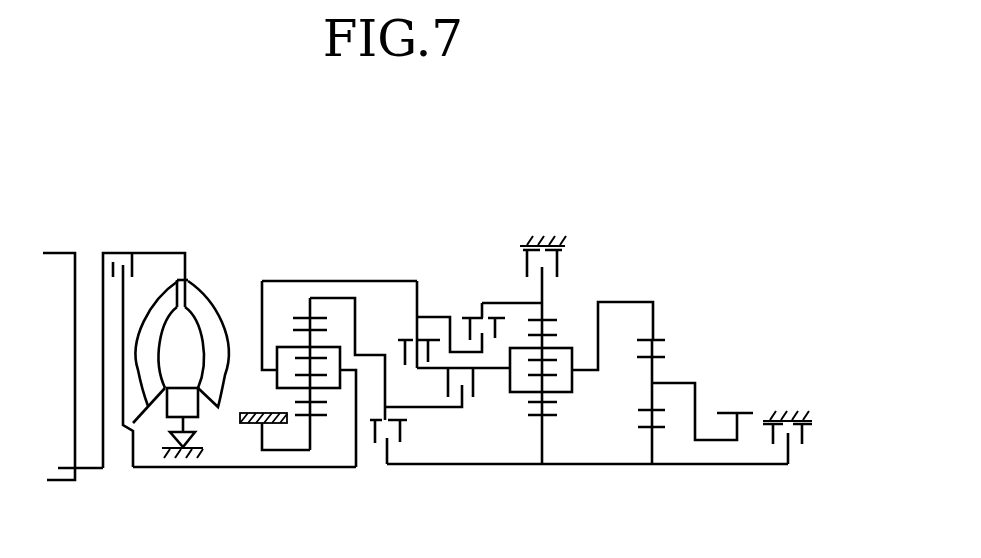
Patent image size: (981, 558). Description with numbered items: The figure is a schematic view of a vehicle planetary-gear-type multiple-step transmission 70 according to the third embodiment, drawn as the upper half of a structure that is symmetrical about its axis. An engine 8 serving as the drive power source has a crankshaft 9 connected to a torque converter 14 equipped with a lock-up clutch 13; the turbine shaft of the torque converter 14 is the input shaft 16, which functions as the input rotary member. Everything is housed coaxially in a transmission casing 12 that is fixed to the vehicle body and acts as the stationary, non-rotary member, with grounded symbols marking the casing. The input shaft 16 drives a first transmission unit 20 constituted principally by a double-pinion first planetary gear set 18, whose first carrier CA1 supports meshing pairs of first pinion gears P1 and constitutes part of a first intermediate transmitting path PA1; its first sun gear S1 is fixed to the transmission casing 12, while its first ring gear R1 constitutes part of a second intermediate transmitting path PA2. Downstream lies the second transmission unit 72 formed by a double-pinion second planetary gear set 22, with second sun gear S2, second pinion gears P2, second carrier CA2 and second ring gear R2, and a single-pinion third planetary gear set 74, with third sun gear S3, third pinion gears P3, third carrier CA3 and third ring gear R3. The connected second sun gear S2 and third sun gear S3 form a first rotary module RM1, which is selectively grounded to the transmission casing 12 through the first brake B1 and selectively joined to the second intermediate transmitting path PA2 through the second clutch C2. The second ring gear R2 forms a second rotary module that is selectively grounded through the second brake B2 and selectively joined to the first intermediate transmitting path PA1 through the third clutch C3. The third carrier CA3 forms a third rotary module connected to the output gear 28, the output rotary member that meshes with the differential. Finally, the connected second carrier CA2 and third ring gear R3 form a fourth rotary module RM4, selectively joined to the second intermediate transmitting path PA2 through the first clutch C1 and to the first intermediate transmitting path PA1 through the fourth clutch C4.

The engine 8 is at (60, 257).
The crankshaft 9 is at (89, 466).
The transmission casing 12 is at (250, 426).
The lock-up clutch 13 is at (134, 273).
The torque converter 14 is at (203, 256).
The input shaft 16 is at (185, 468).
The first planetary gear set 18 is at (308, 486).
The first transmission unit 20 is at (312, 194).
The second planetary gear set 22 is at (531, 487).
The output gear 28 is at (743, 412).
The transmission 70 is at (433, 116).
The second transmission unit 72 is at (603, 162).
The third planetary gear set 74 is at (650, 490).
The first intermediate transmitting path PA1 is at (348, 280).
The second intermediate transmitting path PA2 is at (378, 353).
The first ring gear R1 is at (305, 317).
The first carrier CA1 is at (276, 378).
The first pinion gears P1 is at (318, 397).
The first sun gear S1 is at (313, 418).
The first clutch C1 is at (447, 387).
The second clutch C2 is at (396, 442).
The third clutch C3 is at (479, 323).
The fourth clutch C4 is at (415, 324).
The first brake B1 is at (787, 428).
The second brake B2 is at (531, 263).
The second ring gear R2 is at (550, 318).
The second carrier CA2 is at (513, 393).
The second pinion gears P2 is at (553, 398).
The second sun gear S2 is at (550, 418).
The third ring gear R3 is at (663, 338).
The third carrier CA3 is at (687, 383).
The third pinion gears P3 is at (642, 411).
The third sun gear S3 is at (657, 428).
The first rotary module RM1 is at (620, 466).
The fourth rotary module RM4 is at (627, 300).